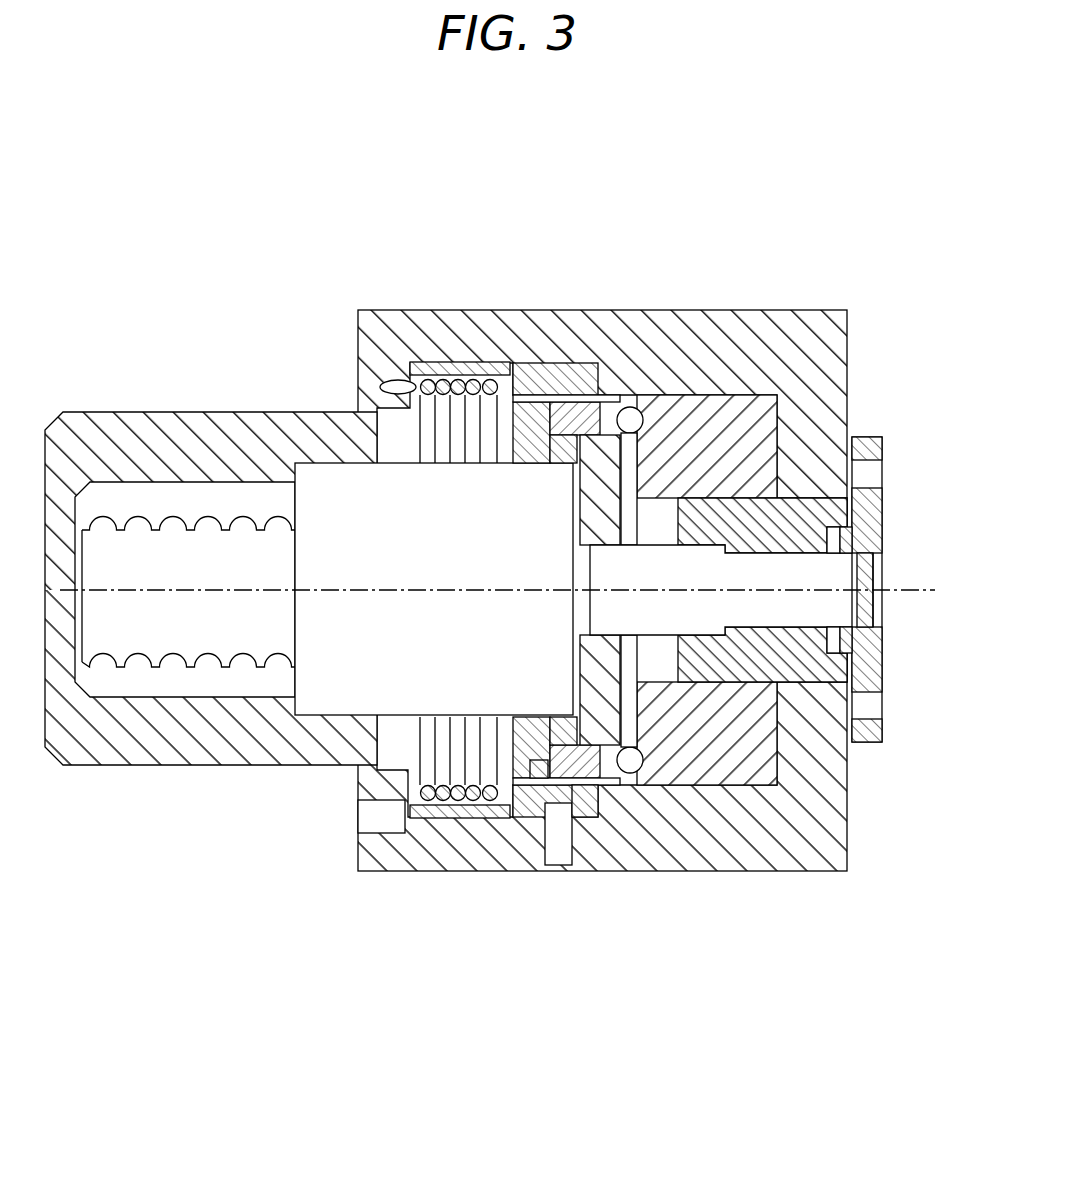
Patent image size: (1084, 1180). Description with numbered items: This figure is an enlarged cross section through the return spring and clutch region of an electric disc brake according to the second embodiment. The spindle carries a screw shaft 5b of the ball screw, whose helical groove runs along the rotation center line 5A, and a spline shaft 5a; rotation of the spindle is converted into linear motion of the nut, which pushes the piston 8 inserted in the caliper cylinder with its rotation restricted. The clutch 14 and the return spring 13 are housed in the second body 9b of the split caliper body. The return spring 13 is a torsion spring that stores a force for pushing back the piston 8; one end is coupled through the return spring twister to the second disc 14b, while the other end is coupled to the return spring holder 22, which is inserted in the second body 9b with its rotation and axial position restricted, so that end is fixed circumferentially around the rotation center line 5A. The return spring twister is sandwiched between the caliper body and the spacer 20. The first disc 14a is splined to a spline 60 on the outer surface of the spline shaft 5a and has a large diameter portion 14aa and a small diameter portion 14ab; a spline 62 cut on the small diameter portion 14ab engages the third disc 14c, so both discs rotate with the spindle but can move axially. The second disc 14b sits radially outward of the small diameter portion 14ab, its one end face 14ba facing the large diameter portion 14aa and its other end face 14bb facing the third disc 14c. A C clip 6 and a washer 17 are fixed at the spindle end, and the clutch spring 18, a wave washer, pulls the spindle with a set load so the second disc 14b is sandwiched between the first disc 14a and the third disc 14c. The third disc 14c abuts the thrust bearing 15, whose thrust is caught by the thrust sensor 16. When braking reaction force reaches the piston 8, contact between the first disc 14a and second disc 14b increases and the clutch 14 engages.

The spline shaft 5a is at (688, 603).
The screw shaft 5b is at (190, 620).
The rotation center line 5A is at (912, 592).
The C clip 6 is at (876, 543).
The piston 8 is at (157, 412).
The second body 9b is at (405, 870).
The return spring 13 is at (430, 368).
The clutch 14 is at (566, 559).
The first disc 14a is at (523, 398).
The second disc 14b is at (555, 399).
The third disc 14c is at (580, 410).
The large diameter portion 14aa is at (505, 817).
The small diameter portion 14ab is at (612, 790).
The one end face 14ba is at (540, 820).
The other end face 14bb is at (575, 800).
The thrust bearing 15 is at (642, 396).
The thrust sensor 16 is at (780, 410).
The washer 17 is at (876, 512).
The clutch spring 18 is at (882, 475).
The spacer 20 is at (482, 382).
The return spring holder 22 is at (378, 387).
The spline 60 is at (655, 540).
The spline 62 is at (633, 409).